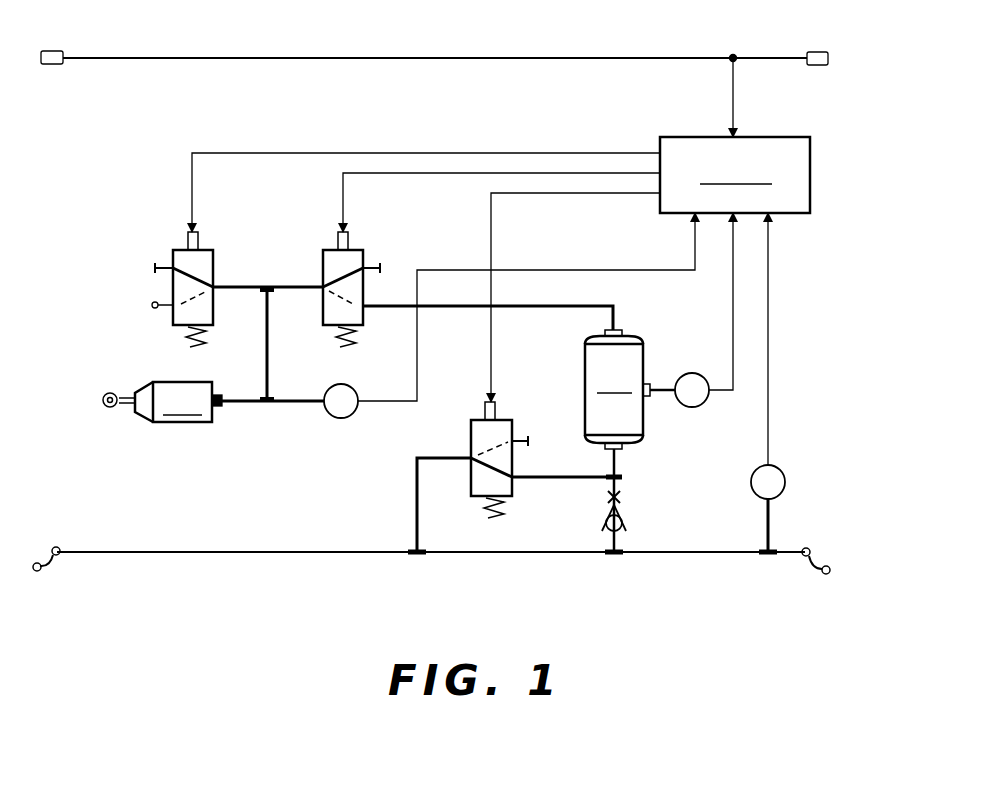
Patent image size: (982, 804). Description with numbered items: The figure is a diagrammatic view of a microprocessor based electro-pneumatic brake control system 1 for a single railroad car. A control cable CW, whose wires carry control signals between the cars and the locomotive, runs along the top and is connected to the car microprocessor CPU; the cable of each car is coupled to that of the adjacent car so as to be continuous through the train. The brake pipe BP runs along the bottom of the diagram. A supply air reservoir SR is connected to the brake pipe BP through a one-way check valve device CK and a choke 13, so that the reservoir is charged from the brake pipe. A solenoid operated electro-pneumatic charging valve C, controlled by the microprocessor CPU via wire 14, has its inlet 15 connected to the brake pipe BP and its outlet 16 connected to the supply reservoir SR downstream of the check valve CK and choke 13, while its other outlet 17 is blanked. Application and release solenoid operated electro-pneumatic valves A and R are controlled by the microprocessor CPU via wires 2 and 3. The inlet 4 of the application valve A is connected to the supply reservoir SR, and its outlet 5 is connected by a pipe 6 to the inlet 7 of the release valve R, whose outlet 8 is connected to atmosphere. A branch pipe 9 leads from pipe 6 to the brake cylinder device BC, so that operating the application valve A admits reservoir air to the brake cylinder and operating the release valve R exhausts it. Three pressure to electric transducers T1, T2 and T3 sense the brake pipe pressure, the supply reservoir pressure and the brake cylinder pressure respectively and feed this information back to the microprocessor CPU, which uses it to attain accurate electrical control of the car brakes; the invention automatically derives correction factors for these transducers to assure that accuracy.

The electro-pneumatic brake control system 1 is at (436, 116).
The wire 2 is at (251, 153).
The wire 3 is at (417, 174).
The inlet of application valve 4 is at (366, 312).
The outlet of application valve 5 is at (326, 291).
The pipe 6 is at (243, 285).
The inlet of release valve 7 is at (214, 291).
The outlet of release valve 8 is at (170, 276).
The branch pipe 9 is at (266, 376).
The choke 13 is at (622, 497).
The wire 14 is at (565, 195).
The inlet of charging valve 15 is at (471, 457).
The outlet of charging valve 16 is at (513, 480).
The outlet of charging valve 17 is at (516, 443).
The control cable CW is at (410, 57).
The brake pipe BP is at (319, 554).
The car microprocessor CPU is at (735, 175).
The brake cylinder device BC is at (162, 402).
The supply air reservoir SR is at (617, 441).
The pressure to electric transducer T1 is at (782, 470).
The pressure to electric transducer T2 is at (692, 373).
The pressure to electric transducer T3 is at (330, 416).
The release valve R is at (180, 247).
The application valve A is at (332, 247).
The charging valve C is at (508, 418).
The one-way check valve device CK is at (630, 522).